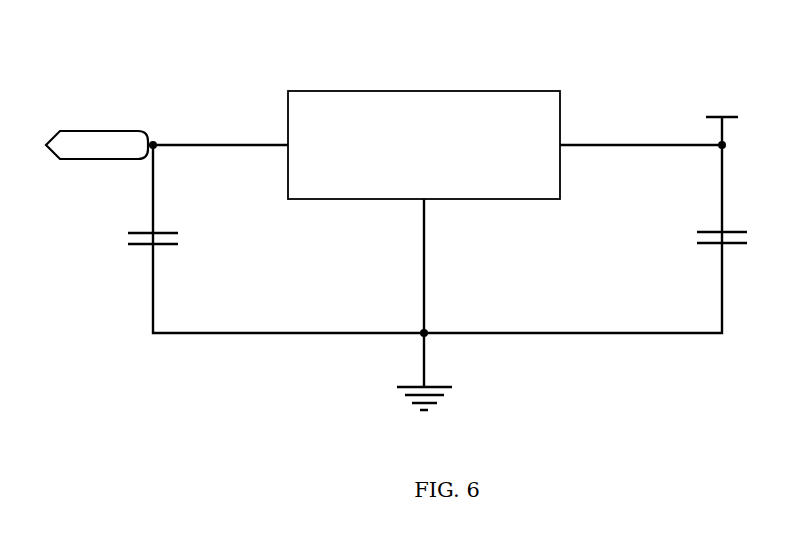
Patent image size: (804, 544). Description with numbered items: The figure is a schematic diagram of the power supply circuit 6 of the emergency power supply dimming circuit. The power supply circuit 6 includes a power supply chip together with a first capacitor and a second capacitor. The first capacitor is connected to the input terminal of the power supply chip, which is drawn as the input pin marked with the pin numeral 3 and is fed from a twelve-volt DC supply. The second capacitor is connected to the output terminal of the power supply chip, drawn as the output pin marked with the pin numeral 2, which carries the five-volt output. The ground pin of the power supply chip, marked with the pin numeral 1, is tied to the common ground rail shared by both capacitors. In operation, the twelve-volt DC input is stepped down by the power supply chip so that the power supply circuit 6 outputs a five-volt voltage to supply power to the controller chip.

The power supply circuit 6 is at (408, 233).
The ground pin of regulator U1 1 is at (408, 293).
The output pin of regulator U1 2 is at (641, 134).
The input pin of regulator U1 3 is at (218, 135).